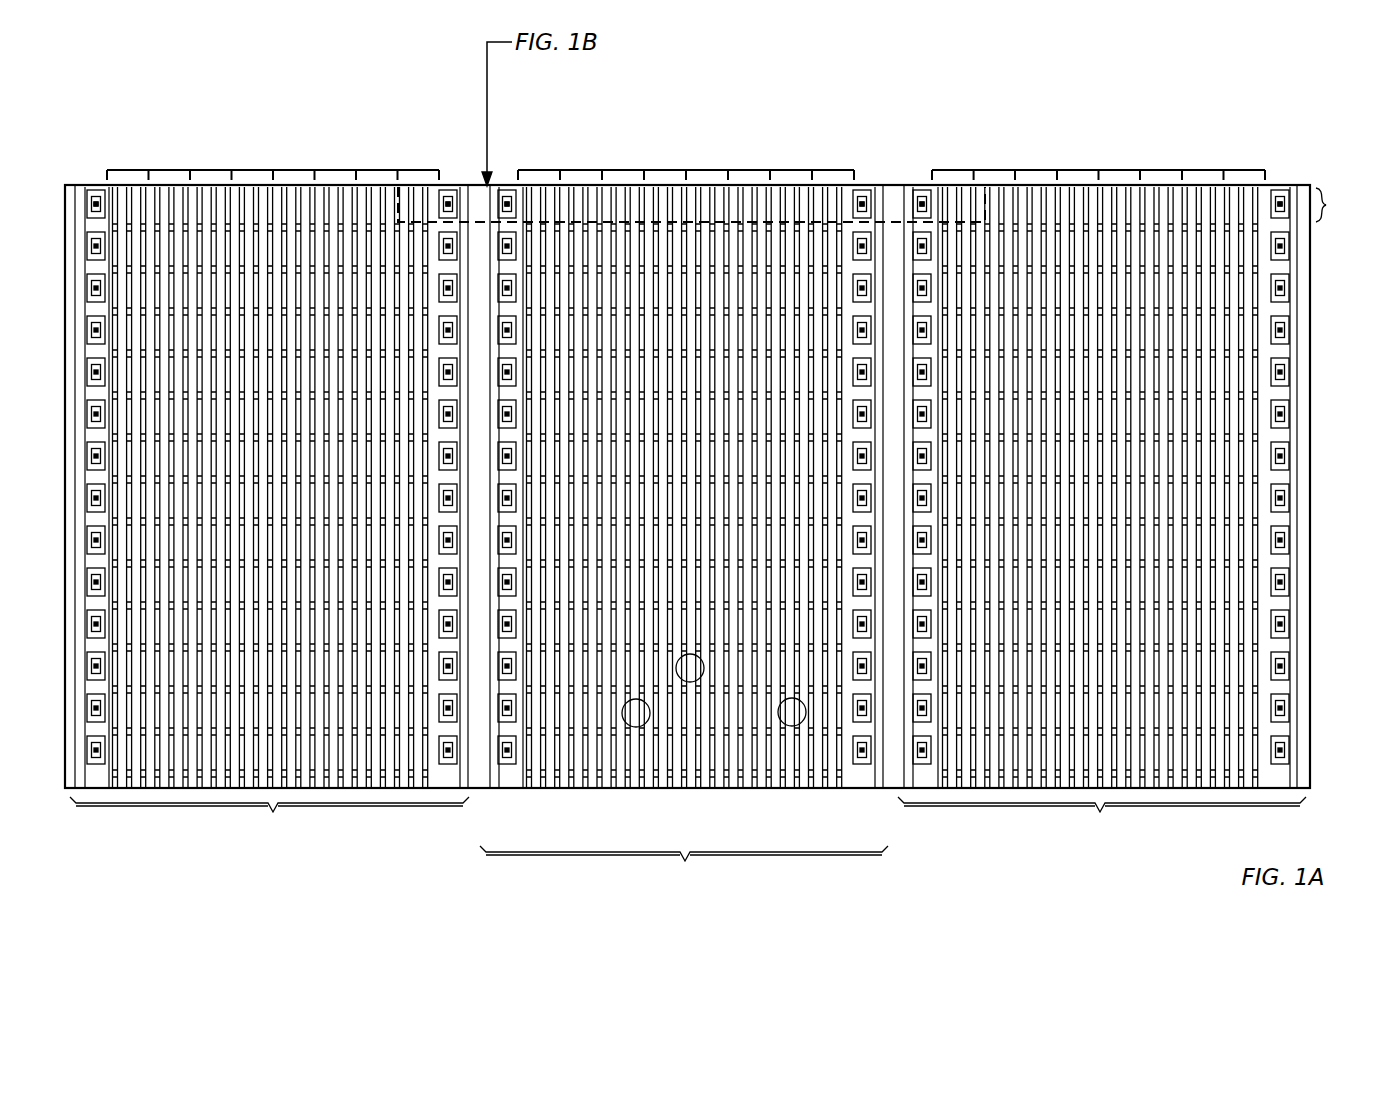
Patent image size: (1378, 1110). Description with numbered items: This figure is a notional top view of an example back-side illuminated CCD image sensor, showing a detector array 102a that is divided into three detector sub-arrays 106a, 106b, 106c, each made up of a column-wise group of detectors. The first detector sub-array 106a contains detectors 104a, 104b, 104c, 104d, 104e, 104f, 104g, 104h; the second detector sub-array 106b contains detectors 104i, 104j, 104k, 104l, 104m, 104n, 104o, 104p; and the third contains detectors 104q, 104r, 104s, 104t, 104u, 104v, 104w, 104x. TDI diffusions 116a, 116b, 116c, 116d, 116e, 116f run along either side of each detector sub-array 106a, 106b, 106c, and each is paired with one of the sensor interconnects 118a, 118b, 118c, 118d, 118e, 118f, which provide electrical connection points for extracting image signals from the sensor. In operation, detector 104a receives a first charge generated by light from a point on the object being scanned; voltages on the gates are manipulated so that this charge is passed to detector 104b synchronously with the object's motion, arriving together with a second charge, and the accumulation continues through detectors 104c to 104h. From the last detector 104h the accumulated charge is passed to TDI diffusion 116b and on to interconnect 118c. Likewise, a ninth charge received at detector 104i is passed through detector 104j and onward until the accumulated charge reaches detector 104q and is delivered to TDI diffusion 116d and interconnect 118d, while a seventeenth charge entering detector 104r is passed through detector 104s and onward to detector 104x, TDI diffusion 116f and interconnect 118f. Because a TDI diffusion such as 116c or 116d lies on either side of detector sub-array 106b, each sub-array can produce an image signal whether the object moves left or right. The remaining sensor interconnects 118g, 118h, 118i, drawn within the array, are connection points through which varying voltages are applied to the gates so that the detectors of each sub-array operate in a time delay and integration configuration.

The detector array 102a is at (1328, 205).
The detector 104a is at (128, 170).
The detector 104b is at (169, 170).
The detector 104c is at (211, 170).
The detector 104d is at (252, 170).
The detector 104e is at (294, 170).
The detector 104f is at (335, 170).
The detector 104g is at (377, 170).
The detector 104h is at (418, 170).
The detector 104i is at (539, 170).
The detector 104j is at (581, 170).
The detector 104k is at (623, 170).
The detector 104l is at (665, 170).
The detector 104m is at (707, 170).
The detector 104n is at (749, 170).
The detector 104o is at (791, 170).
The detector 104p is at (833, 170).
The detector 104q is at (953, 170).
The detector 104r is at (995, 170).
The detector 104s is at (1036, 170).
The detector 104t is at (1078, 170).
The detector 104u is at (1120, 170).
The detector 104v is at (1161, 170).
The detector 104w is at (1203, 170).
The detector 104x is at (1244, 170).
The detector sub-array 106a is at (269, 819).
The detector sub-array 106b is at (684, 869).
The detector sub-array 106c is at (1102, 819).
The TDI diffusion 116a is at (94, 202).
The TDI diffusion 116b is at (447, 202).
The TDI diffusion 116c is at (508, 202).
The TDI diffusion 116d is at (861, 202).
The TDI diffusion 116e is at (923, 202).
The TDI diffusion 116f is at (1281, 202).
The sensor interconnect 118a is at (93, 204).
The sensor interconnect 118b is at (448, 202).
The sensor interconnect 118c is at (507, 202).
The sensor interconnect 118d is at (862, 202).
The sensor interconnect 118e is at (921, 202).
The sensor interconnect 118f is at (1281, 204).
The sensor interconnect 118g is at (632, 727).
The sensor interconnect 118h is at (697, 682).
The sensor interconnect 118i is at (799, 725).